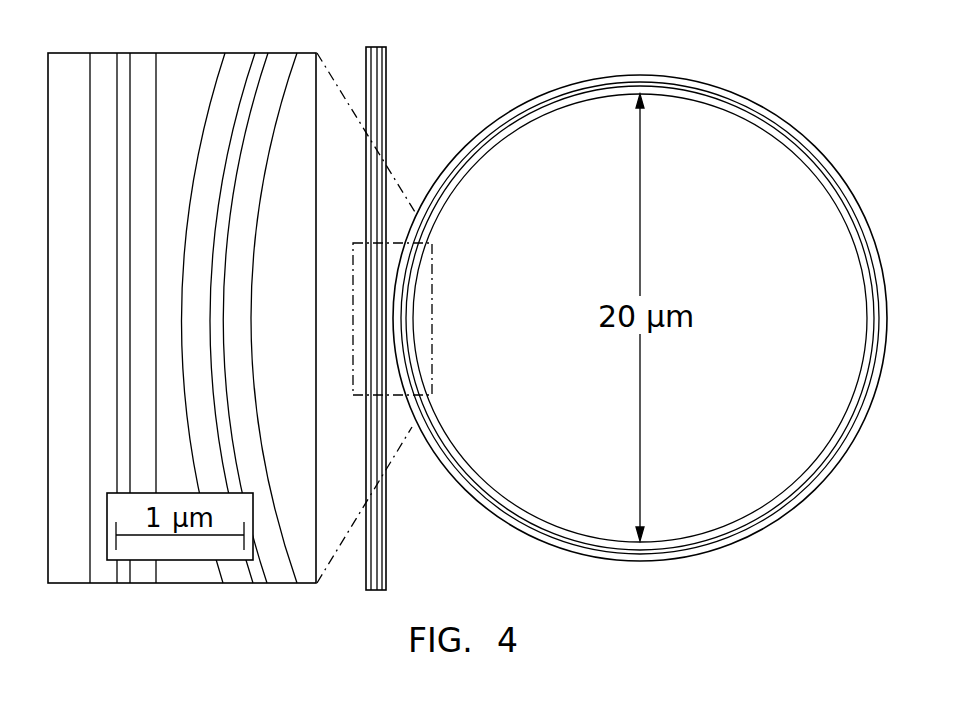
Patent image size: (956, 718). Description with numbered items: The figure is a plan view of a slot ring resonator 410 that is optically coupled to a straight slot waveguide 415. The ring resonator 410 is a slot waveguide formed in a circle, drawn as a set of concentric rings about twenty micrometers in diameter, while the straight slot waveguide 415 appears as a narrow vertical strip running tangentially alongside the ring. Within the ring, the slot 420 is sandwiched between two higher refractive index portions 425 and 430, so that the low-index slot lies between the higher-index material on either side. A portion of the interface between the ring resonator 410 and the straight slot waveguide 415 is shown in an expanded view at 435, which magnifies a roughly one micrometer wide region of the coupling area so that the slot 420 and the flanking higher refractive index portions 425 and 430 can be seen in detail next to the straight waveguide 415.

The slot ring resonator 410 is at (252, 316).
The straight slot waveguide 415 is at (143, 112).
The slot 420 is at (218, 253).
The higher refractive index portion 425 is at (237, 380).
The higher refractive index portion 430 is at (201, 410).
The expanded view of interface 435 is at (141, 52).